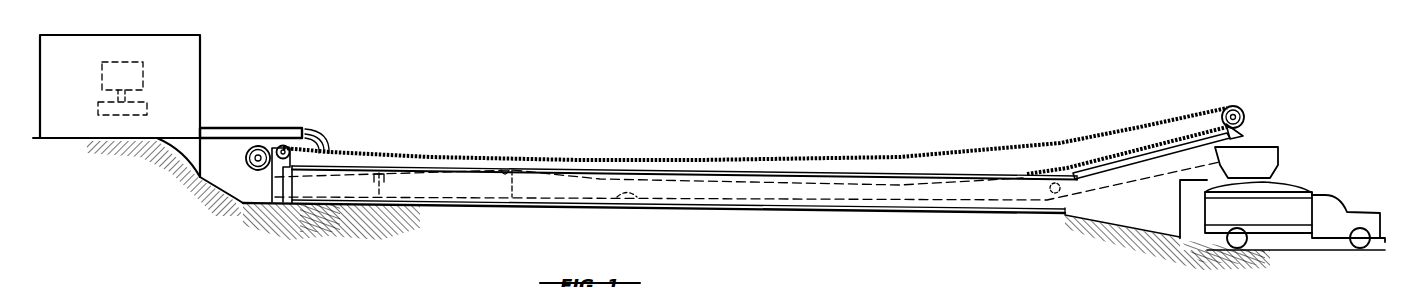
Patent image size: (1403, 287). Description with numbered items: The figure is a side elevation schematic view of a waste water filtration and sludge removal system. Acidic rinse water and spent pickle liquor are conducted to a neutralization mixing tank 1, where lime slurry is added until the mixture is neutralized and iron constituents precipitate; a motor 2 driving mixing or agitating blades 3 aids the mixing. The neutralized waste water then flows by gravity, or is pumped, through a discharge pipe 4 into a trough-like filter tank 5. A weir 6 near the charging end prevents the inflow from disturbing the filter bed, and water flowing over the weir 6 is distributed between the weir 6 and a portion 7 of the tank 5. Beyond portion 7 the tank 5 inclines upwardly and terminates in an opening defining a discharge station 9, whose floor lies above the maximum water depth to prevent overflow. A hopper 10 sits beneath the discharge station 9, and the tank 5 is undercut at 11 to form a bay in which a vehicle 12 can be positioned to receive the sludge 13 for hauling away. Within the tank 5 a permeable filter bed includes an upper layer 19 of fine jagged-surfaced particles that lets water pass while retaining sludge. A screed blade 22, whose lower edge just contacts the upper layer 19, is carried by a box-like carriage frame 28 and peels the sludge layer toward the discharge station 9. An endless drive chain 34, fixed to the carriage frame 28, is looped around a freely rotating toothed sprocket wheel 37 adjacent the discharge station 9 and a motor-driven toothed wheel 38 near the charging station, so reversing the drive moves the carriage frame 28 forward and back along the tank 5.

The neutralization mixing tank 1 is at (200, 63).
The motor 2 is at (143, 70).
The mixing or agitating blades 3 is at (147, 105).
The discharge pipe 4 is at (273, 127).
The filter tank 5 is at (472, 170).
The weir 6 is at (387, 172).
The portion of tank 7 is at (1073, 170).
The discharge station 9 is at (1222, 144).
The hopper 10 is at (1275, 158).
The undercut 11 is at (1190, 202).
The vehicle 12 is at (1327, 230).
The sludge 13 is at (1287, 188).
The upper layer 19 is at (637, 198).
The screed blade 22 is at (513, 187).
The carriage frame 28 is at (513, 168).
The endless drive chain 34 is at (810, 160).
The toothed sprocket wheel 37 is at (1240, 107).
The toothed wheel 38 is at (247, 167).